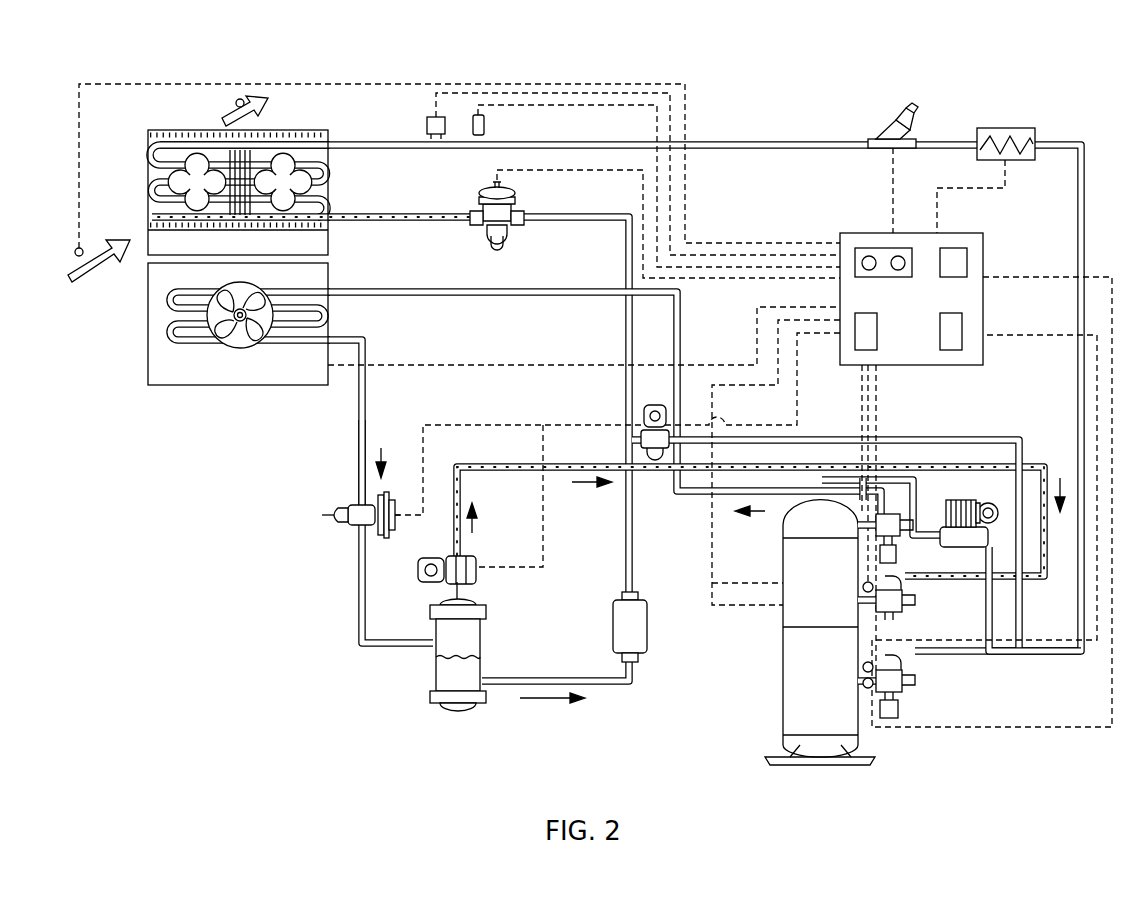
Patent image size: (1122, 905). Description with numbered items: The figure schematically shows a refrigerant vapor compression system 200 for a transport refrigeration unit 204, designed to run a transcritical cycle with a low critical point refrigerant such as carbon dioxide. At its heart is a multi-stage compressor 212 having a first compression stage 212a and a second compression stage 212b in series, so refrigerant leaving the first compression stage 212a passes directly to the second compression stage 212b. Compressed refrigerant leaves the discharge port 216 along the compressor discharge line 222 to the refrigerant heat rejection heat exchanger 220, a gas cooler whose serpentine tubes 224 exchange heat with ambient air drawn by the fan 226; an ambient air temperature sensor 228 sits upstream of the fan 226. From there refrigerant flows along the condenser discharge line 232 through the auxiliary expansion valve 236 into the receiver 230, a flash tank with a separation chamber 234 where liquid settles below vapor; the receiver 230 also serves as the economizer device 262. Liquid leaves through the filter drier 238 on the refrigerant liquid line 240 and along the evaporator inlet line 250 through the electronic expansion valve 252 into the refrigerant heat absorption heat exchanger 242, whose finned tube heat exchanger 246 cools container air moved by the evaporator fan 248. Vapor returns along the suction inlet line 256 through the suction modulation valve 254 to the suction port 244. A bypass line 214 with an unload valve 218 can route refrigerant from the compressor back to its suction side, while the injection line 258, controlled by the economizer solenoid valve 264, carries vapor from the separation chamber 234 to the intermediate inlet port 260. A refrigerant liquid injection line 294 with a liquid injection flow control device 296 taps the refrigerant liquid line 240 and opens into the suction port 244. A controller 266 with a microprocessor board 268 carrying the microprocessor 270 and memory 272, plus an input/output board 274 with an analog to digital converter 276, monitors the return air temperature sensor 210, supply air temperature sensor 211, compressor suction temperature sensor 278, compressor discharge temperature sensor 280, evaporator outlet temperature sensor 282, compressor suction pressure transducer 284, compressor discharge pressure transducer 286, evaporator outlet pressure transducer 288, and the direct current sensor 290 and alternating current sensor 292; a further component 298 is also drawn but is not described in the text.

The refrigerant vapor compression system 200 is at (595, 392).
The transport refrigeration unit 204 is at (780, 72).
The return air temperature sensor 210 is at (88, 261).
The supply air temperature sensor 211 is at (236, 109).
The multi-stage compressor 212 is at (795, 632).
The first compression stage 212a is at (825, 685).
The second compression stage 212b is at (820, 597).
The bypass line 214 is at (915, 505).
The discharge port 216 is at (892, 530).
The unload valve 218 is at (985, 505).
The refrigerant heat rejection heat exchanger 220 is at (336, 288).
The compressor discharge line 222 is at (428, 290).
The serpentine tubes 224 is at (330, 330).
The fan 226 is at (215, 320).
The ambient air temperature sensor 228 is at (408, 366).
The receiver 230 is at (456, 646).
The condenser discharge line 232 is at (356, 434).
The separation chamber 234 is at (460, 637).
The auxiliary expansion valve 236 is at (334, 522).
The filter drier 238 is at (648, 618).
The refrigerant liquid line 240 is at (612, 690).
The refrigerant heat absorption heat exchanger 242 is at (324, 142).
The suction port 244 is at (908, 678).
The finned tube heat exchanger 246 is at (158, 154).
The evaporator fan 248 is at (320, 182).
The evaporator inlet line 250 is at (405, 212).
The electronic expansion valve 252 is at (510, 196).
The suction modulation valve 254 is at (916, 120).
The suction inlet line 256 is at (742, 142).
The injection line 258 is at (486, 478).
The intermediate inlet port 260 is at (890, 615).
The economizer device 262 is at (486, 627).
The economizer solenoid valve 264 is at (412, 570).
The controller 266 is at (938, 294).
The microprocessor board 268 is at (984, 300).
The microprocessor 270 is at (862, 248).
The memory 272 is at (896, 270).
The input/output board 274 is at (963, 342).
The analog to digital converter 276 is at (878, 333).
The compressor suction temperature sensor 278 is at (938, 728).
The compressor discharge temperature sensor 280 is at (855, 438).
The evaporator outlet temperature sensor 282 is at (484, 119).
The compressor suction pressure transducer 284 is at (1026, 645).
The compressor discharge pressure transducer 286 is at (853, 412).
The evaporator outlet pressure transducer 288 is at (428, 121).
The direct current sensor 290 is at (655, 552).
The alternating current sensor 292 is at (714, 604).
The refrigerant liquid injection line 294 is at (990, 436).
The liquid injection flow control device 296 is at (651, 405).
The heater 298 is at (1008, 127).